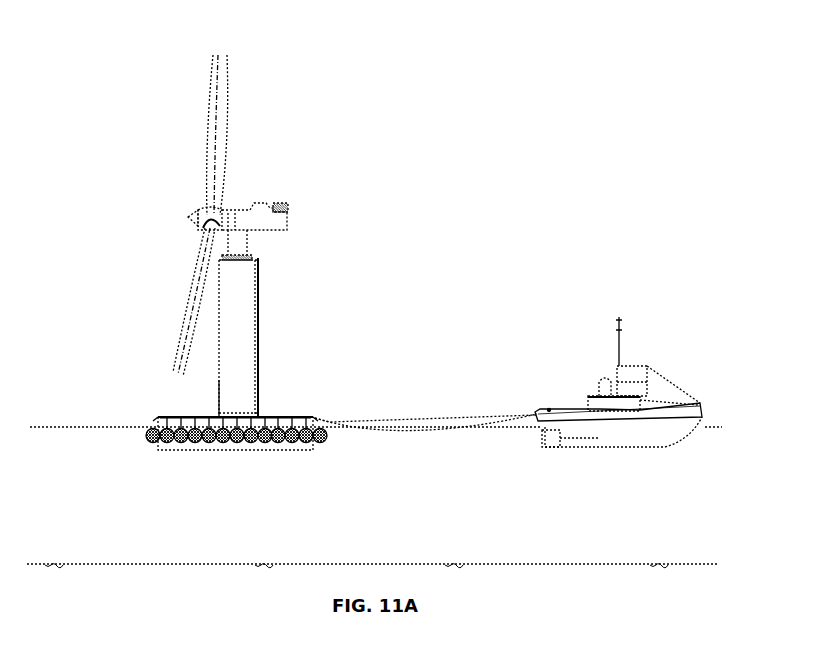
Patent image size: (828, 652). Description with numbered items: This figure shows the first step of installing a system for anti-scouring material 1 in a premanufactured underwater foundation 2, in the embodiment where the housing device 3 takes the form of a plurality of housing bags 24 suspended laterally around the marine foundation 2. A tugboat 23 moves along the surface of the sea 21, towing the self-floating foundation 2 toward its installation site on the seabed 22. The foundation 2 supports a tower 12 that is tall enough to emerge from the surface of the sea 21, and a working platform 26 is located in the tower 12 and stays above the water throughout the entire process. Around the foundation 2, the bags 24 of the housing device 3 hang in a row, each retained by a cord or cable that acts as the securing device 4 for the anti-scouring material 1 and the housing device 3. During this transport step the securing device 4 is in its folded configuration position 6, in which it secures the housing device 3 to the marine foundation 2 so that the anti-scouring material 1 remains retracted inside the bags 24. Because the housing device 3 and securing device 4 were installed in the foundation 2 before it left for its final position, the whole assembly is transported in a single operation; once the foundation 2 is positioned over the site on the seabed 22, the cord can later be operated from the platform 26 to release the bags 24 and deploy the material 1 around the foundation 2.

The anti-scouring material 1 is at (236, 437).
The premanufactured underwater foundation 2 is at (177, 422).
The housing device 3 is at (278, 442).
The securing device 4 is at (257, 386).
The folded configuration position 6 is at (278, 417).
The tower 12 is at (219, 327).
The surface of the sea 21 is at (69, 427).
The seabed 22 is at (573, 564).
The tugboat 23 is at (572, 412).
The housing bags 24 is at (292, 443).
The working platform 26 is at (260, 263).